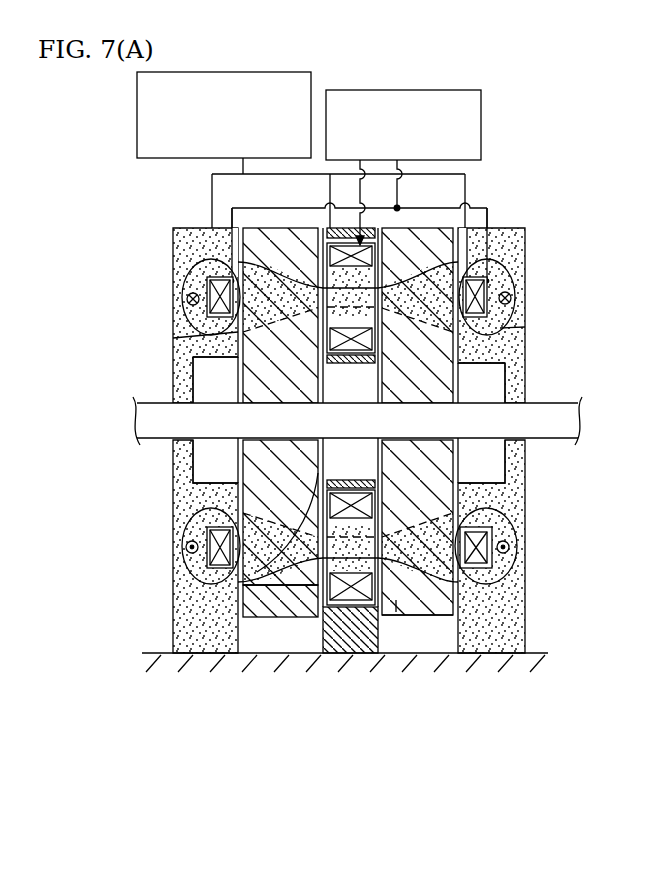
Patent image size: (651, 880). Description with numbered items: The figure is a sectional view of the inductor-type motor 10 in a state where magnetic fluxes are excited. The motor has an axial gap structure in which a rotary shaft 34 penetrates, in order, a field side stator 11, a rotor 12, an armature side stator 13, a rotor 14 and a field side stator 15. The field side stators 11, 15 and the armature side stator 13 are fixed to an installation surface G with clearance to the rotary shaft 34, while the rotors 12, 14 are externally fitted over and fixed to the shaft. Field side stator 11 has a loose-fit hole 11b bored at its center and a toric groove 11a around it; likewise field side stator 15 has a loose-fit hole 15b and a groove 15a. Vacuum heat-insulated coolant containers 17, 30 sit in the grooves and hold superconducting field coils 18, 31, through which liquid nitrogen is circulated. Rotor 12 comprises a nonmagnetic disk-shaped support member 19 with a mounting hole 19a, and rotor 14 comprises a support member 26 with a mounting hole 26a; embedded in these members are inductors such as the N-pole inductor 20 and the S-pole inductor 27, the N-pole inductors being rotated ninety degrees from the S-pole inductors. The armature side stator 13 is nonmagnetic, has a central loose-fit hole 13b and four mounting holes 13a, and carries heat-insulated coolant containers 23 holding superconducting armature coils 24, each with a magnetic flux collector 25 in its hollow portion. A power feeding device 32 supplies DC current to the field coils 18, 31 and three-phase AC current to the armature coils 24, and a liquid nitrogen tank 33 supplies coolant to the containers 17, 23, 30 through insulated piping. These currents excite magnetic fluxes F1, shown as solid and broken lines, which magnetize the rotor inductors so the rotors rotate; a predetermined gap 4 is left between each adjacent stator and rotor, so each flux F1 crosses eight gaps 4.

The inductor-type motor 10 is at (101, 209).
The liquid nitrogen tank 33 is at (255, 72).
The power feeding device 32 is at (388, 90).
The field side stator 11 is at (173, 527).
The groove 11a is at (187, 300).
The loose-fit hole 11b is at (173, 445).
The field side stator 15 is at (526, 624).
The groove 15a is at (525, 327).
The loose-fit hole 15b is at (505, 455).
The heat-insulated coolant container 17 is at (230, 280).
The field coil 18 is at (207, 293).
The heat-insulated coolant container 30 is at (490, 280).
The field coil 31 is at (511, 299).
The N-pole inductor 20 is at (173, 338).
The support member 19 is at (260, 457).
The hole 19a is at (250, 284).
The support member 26 is at (420, 385).
The hole 26a is at (458, 484).
The S-pole inductor 27 is at (463, 363).
The rotary shaft 34 is at (137, 421).
The rotor 12 is at (270, 617).
The armature side stator 13 is at (396, 612).
The mounting hole 13a is at (355, 640).
The loose-fit hole 13b is at (257, 605).
The rotor 14 is at (461, 600).
The heat-insulated coolant container 23 is at (343, 597).
The armature coil 24 is at (360, 563).
The flux collector 25 is at (378, 640).
The gap 4 is at (232, 610).
The magnetic flux F1 is at (500, 258).
The installation surface G is at (157, 653).